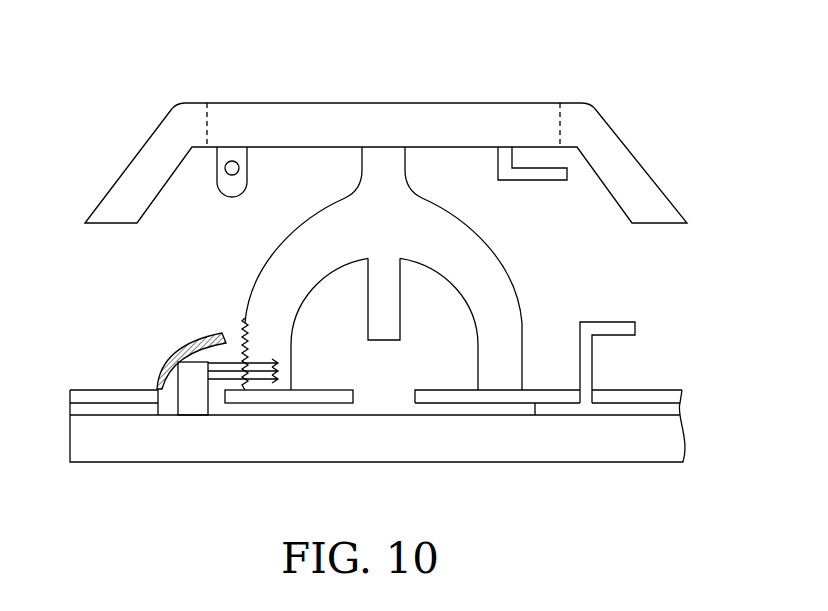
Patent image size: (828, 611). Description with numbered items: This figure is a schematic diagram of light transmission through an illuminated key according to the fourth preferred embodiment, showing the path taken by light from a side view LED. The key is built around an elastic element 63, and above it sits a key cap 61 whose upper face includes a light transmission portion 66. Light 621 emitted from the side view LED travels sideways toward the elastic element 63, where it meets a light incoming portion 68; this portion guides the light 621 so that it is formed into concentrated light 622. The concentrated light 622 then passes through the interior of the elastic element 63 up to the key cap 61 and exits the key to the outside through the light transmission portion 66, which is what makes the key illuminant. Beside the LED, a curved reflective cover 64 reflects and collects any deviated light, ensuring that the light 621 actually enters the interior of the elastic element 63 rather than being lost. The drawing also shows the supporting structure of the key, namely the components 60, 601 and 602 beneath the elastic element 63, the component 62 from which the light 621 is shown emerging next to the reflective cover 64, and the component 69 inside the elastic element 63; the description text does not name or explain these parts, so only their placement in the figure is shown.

The base 60 is at (190, 447).
The intermediate layer 601 is at (77, 408).
The plate 602 is at (105, 395).
The key cap 61 is at (142, 168).
The block 62 is at (190, 402).
The light 621 is at (236, 360).
The concentrated light 622 is at (260, 380).
The elastic element 63 is at (493, 280).
The reflective cover 64 is at (173, 355).
The light transmission portion 66 is at (477, 113).
The light incoming portion 68 is at (227, 362).
The slot 69 is at (385, 340).